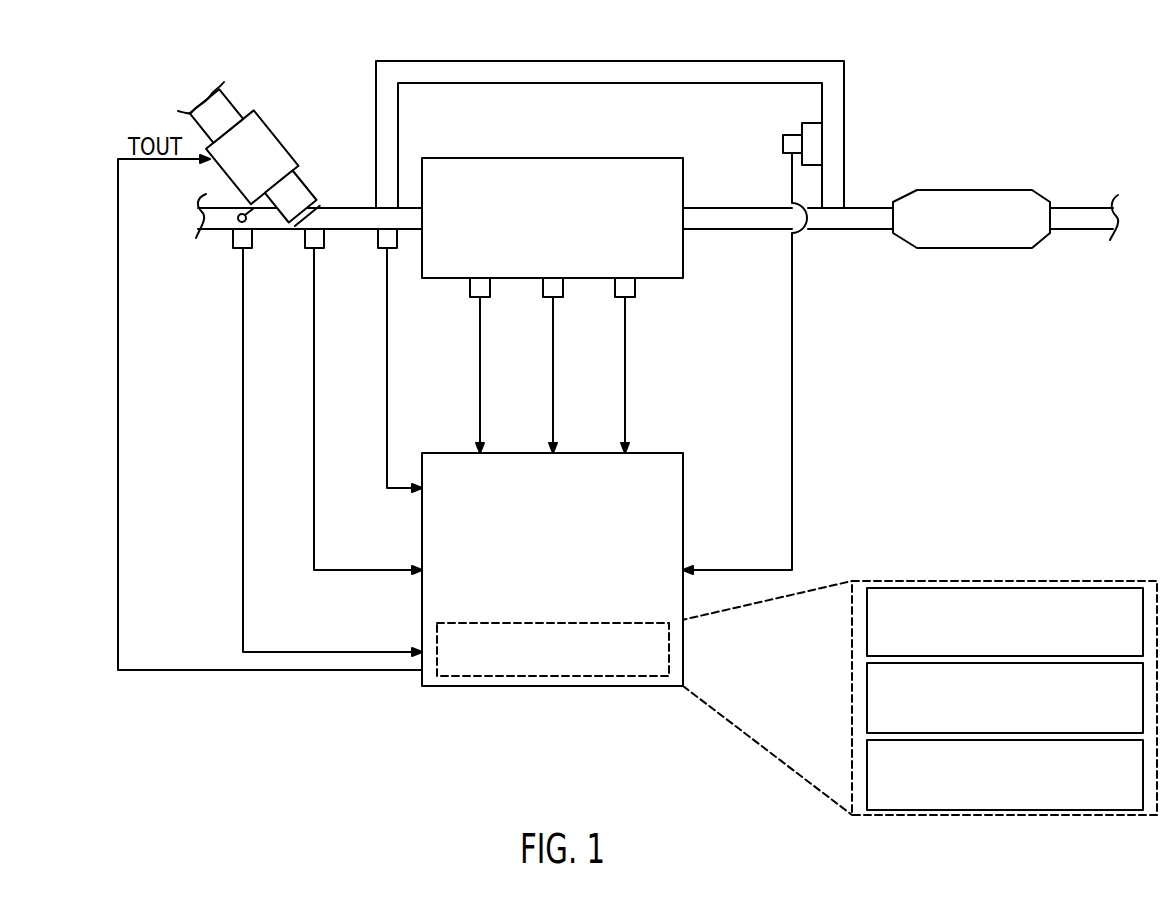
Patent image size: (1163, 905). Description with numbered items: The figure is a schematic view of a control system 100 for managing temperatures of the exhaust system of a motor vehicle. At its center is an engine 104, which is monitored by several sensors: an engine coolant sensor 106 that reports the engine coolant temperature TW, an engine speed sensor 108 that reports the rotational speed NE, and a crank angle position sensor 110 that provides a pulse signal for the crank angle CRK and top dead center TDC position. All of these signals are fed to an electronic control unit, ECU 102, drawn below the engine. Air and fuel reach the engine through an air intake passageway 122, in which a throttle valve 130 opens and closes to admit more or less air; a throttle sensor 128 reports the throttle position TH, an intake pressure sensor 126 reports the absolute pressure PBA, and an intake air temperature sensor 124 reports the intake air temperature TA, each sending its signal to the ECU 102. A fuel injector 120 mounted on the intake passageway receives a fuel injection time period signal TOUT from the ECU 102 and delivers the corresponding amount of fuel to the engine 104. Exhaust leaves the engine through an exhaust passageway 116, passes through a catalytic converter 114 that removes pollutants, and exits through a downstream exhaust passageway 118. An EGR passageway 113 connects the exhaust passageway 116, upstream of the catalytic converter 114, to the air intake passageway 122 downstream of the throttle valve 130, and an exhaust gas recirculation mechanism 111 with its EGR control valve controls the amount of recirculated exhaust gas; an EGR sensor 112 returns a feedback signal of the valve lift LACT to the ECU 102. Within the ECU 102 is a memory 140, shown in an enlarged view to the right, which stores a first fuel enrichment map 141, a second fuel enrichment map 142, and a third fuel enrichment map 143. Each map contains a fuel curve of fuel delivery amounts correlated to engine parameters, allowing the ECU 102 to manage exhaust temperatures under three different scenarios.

The control system 100 is at (110, 90).
The electronic control unit (ECU) 102 is at (433, 687).
The engine 104 is at (485, 158).
The engine coolant sensor 106 is at (480, 298).
The engine speed sensor 108 is at (557, 298).
The crank angle position sensor 110 is at (635, 288).
The exhaust gas recirculation mechanism 111 is at (802, 124).
The EGR sensor 112 is at (783, 141).
The EGR passageway 113 is at (653, 84).
The catalytic converter 114 is at (985, 190).
The exhaust passageway 116 is at (719, 207).
The downstream exhaust passageway 118 is at (1087, 207).
The fuel injector 120 is at (279, 139).
The air intake passageway 122 is at (353, 207).
The intake air temperature sensor 124 is at (382, 250).
The intake pressure sensor 126 is at (308, 250).
The throttle sensor 128 is at (237, 250).
The throttle valve 130 is at (238, 219).
The memory 140 is at (572, 678).
The first fuel enrichment map 141 is at (1078, 588).
The second fuel enrichment map 142 is at (867, 703).
The third fuel enrichment map 143 is at (1057, 811).